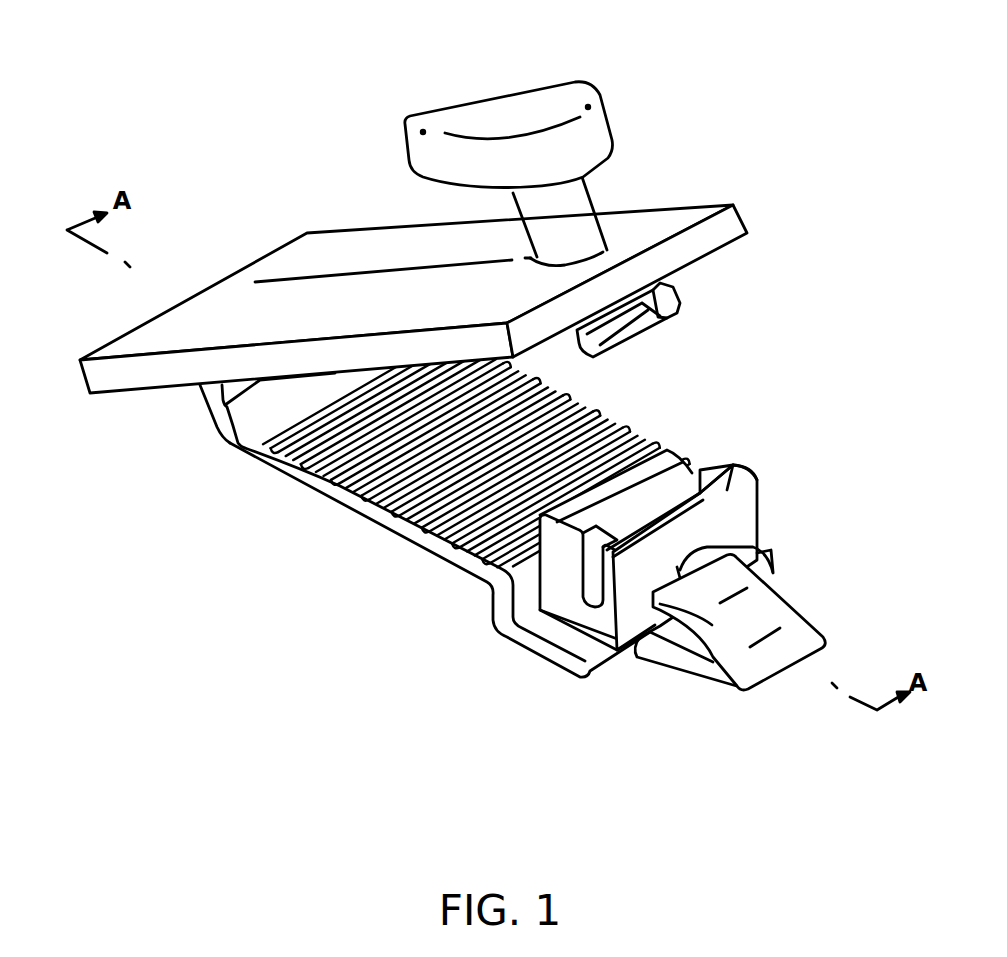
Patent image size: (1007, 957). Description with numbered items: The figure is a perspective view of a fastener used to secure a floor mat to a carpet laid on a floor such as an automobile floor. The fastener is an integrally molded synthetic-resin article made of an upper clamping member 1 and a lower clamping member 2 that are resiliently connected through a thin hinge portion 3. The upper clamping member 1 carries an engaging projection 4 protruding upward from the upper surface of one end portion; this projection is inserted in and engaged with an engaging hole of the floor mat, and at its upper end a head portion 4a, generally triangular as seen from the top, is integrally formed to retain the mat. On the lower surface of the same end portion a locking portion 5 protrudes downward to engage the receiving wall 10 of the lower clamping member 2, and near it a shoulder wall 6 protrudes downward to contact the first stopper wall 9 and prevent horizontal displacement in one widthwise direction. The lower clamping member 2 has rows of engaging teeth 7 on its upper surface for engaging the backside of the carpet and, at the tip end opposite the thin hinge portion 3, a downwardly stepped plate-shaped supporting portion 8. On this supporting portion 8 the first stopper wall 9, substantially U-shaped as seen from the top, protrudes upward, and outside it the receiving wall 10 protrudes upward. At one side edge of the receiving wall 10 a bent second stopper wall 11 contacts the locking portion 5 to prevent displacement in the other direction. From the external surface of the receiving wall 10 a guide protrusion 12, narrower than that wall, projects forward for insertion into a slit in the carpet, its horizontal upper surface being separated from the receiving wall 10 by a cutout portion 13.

The upper clamping member 1 is at (296, 245).
The lower clamping member 2 is at (347, 493).
The thin hinge portion 3 is at (232, 438).
The engaging projection 4 is at (573, 197).
The head portion 4a is at (527, 103).
The locking portion 5 is at (627, 327).
The shoulder wall 6 is at (680, 290).
The engaging teeth 7 is at (580, 404).
The supporting portion 8 is at (568, 666).
The first stopper wall 9 is at (553, 562).
The receiving wall 10 is at (735, 512).
The second stopper wall 11 is at (740, 460).
The guide protrusion 12 is at (720, 687).
The cutout portion 13 is at (762, 548).